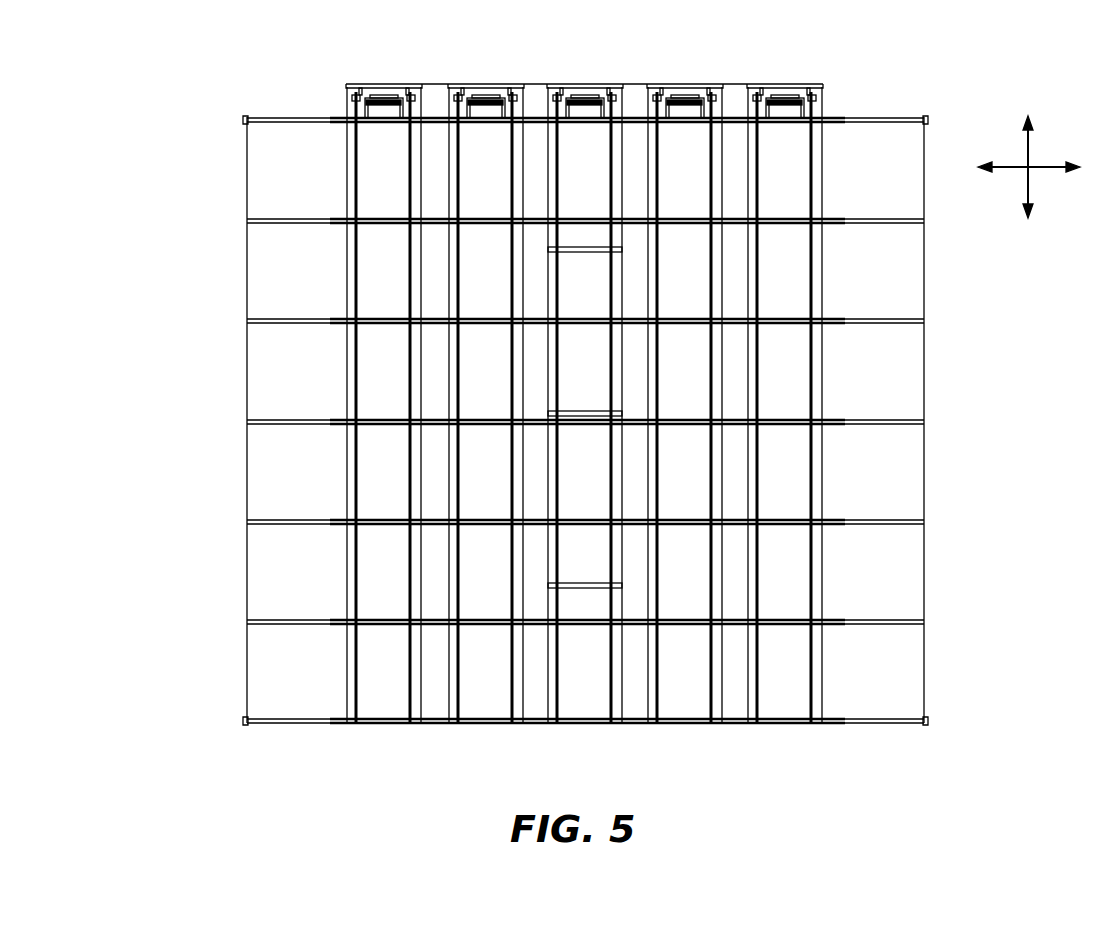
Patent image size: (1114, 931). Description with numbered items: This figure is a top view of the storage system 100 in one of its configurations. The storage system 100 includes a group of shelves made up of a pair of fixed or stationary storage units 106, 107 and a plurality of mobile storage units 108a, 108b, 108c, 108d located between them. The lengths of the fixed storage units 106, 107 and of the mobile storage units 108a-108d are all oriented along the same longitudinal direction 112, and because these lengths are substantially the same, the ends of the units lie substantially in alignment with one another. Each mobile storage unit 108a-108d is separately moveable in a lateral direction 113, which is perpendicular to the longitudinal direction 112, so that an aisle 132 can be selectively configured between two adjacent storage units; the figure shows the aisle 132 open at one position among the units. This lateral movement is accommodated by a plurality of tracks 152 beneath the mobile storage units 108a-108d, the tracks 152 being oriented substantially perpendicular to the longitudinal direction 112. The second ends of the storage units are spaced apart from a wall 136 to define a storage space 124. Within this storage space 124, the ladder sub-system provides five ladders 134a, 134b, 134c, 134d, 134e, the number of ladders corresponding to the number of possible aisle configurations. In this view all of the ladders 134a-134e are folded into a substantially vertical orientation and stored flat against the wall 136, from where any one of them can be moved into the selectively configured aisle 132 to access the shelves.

The storage system 100 is at (178, 155).
The fixed storage unit 106 is at (866, 676).
The fixed storage unit 107 is at (294, 676).
The mobile storage unit 108a is at (746, 681).
The mobile storage unit 108b is at (648, 681).
The mobile storage unit 108c is at (505, 681).
The mobile storage unit 108d is at (391, 681).
The longitudinal direction 112 is at (1030, 144).
The lateral direction 113 is at (1044, 170).
The storage space 124 is at (636, 108).
The aisle 132 is at (579, 672).
The ladder 134a is at (785, 100).
The ladder 134b is at (685, 100).
The ladder 134c is at (585, 100).
The ladder 134d is at (486, 97).
The ladder 134e is at (385, 97).
The wall 136 is at (530, 83).
The track 152 is at (570, 252).